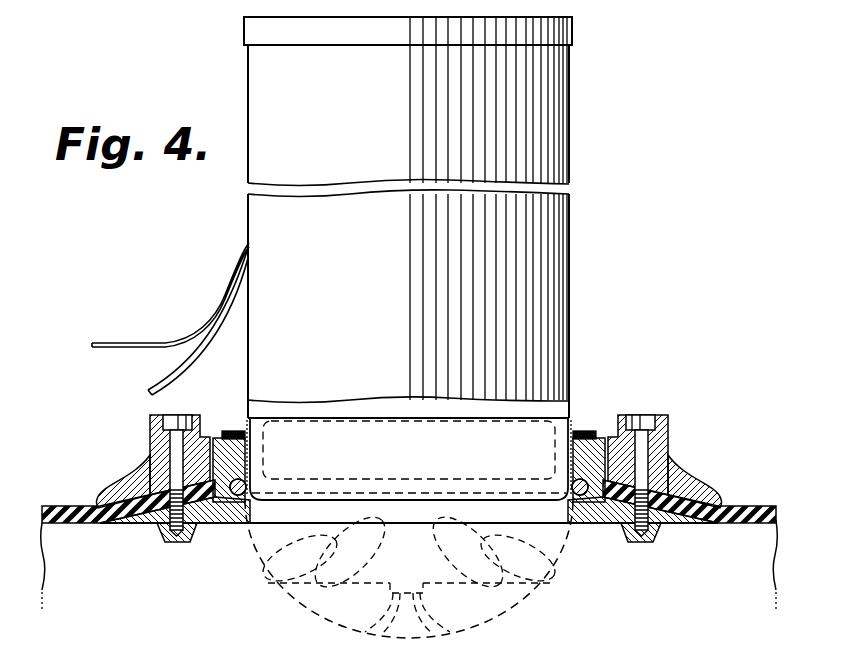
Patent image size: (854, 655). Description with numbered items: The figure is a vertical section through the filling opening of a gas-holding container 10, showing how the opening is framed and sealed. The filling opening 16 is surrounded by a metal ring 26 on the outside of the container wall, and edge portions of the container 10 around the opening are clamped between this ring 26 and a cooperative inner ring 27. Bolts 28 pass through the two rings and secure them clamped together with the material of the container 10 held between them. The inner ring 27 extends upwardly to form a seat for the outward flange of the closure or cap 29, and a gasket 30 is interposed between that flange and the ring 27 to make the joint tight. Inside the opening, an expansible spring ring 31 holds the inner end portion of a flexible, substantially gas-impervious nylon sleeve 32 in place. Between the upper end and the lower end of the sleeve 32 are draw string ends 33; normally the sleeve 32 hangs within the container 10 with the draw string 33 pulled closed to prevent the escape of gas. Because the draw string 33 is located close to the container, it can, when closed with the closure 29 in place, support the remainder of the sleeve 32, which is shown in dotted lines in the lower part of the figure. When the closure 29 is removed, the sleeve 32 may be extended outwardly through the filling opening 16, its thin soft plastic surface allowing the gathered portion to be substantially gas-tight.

The container 10 is at (726, 523).
The filling opening 16 is at (668, 436).
The metal ring 26 is at (700, 480).
The inner ring 27 is at (576, 500).
The bolts 28 is at (645, 417).
The closure 29 is at (263, 447).
The gasket 30 is at (587, 434).
The expansible spring ring 31 is at (236, 500).
The nylon sleeve 32 is at (570, 163).
The draw string 33 is at (170, 386).